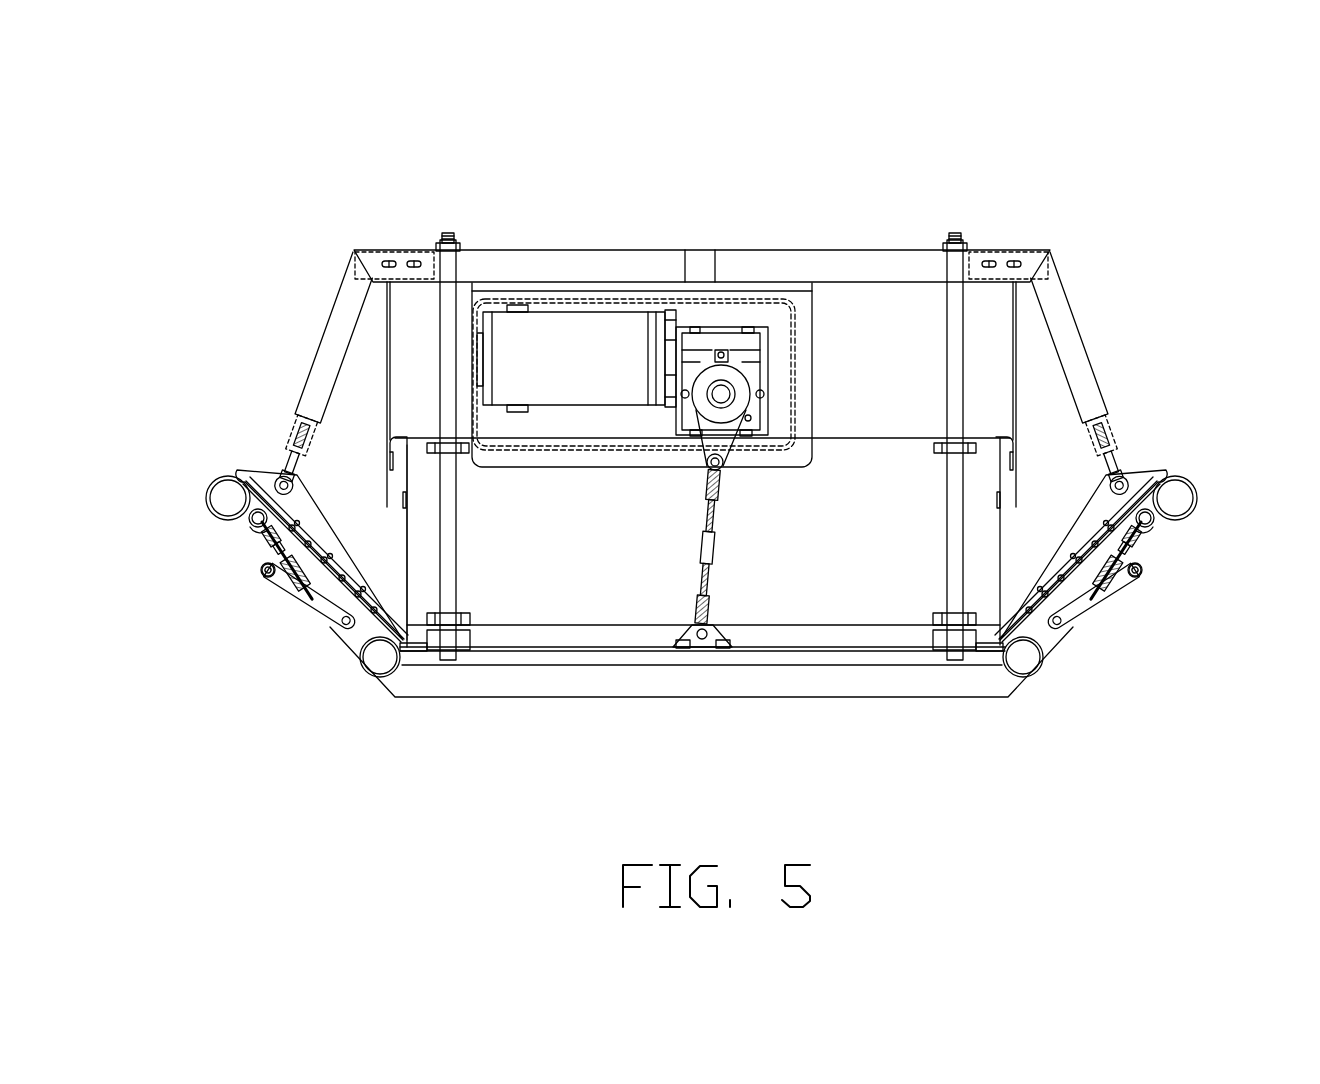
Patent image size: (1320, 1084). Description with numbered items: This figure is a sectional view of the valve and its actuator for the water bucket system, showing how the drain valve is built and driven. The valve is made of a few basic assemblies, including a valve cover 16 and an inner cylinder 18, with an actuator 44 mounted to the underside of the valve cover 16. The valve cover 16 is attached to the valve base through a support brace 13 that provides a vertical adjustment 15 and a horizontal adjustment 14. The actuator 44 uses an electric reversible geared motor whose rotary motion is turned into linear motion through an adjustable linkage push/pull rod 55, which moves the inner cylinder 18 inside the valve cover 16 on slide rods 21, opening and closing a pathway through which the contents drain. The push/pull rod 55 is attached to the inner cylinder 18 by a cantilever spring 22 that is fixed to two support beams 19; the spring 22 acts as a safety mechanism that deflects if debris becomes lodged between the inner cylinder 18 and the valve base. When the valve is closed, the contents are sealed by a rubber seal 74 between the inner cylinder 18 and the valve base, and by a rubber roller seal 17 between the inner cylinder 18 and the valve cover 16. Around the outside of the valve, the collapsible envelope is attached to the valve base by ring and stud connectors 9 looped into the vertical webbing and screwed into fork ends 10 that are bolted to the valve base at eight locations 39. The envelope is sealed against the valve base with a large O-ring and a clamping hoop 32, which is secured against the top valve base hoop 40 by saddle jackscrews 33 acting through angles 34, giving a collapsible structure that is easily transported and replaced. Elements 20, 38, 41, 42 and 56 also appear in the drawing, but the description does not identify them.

The ring and stud connector 9 is at (251, 569).
The fork end 10 is at (290, 603).
The support brace 13 is at (711, 378).
The horizontal adjustment 14 is at (1079, 219).
The vertical adjustment 15 is at (1133, 375).
The valve cover 16 is at (320, 359).
The rubber roller seal 17 is at (319, 440).
The inner cylinder 18 is at (302, 499).
The support beams 19 is at (699, 625).
The clamp brackets 20 is at (1061, 493).
The slide rods 21 is at (1061, 439).
The cantilever spring 22 is at (702, 715).
The clamping hoop 32 is at (202, 529).
The saddle jackscrews 33 is at (268, 559).
The angles 34 is at (231, 578).
The roller 38 is at (220, 469).
The locations 39 is at (1130, 615).
The top valve base hoop 40 is at (1223, 508).
The roller 41 is at (1083, 690).
The trough 42 is at (701, 699).
The actuator 44 is at (608, 291).
The adjustable linkage push/pull rod 55 is at (748, 558).
The crank arm 56 is at (678, 436).
The rubber seal 74 is at (351, 684).